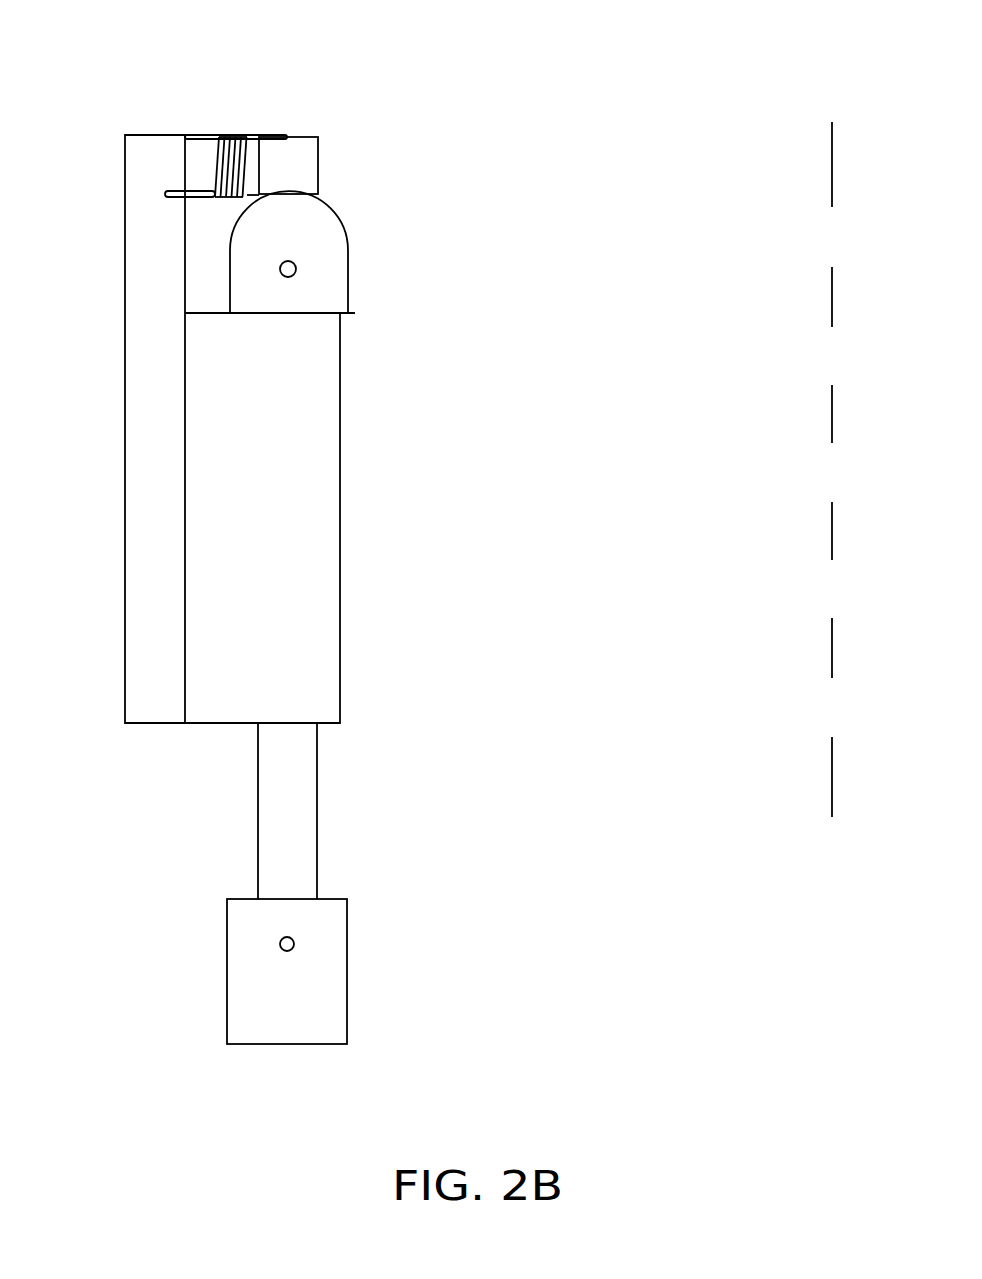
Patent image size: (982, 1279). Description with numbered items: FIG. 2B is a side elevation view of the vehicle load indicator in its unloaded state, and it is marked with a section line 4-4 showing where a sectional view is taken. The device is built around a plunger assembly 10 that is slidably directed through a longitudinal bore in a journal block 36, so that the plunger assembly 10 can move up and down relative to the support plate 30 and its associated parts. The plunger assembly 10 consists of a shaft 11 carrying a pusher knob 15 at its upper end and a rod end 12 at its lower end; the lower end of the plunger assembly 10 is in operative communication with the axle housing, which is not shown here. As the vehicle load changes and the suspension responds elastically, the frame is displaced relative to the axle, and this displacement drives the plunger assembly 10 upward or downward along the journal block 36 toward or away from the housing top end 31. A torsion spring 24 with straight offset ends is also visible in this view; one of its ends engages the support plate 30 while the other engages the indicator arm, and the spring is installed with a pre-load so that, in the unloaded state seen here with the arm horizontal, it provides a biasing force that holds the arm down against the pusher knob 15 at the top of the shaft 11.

The section line 4- 4 is at (875, 137).
The plunger assembly 10 is at (349, 805).
The shaft 11 is at (343, 854).
The rod end 12 is at (345, 971).
The pusher knob 15 is at (330, 191).
The torsion spring 24 is at (242, 99).
The support plate 30 is at (107, 429).
The housing top end 31 is at (142, 68).
The journal block 36 is at (323, 518).